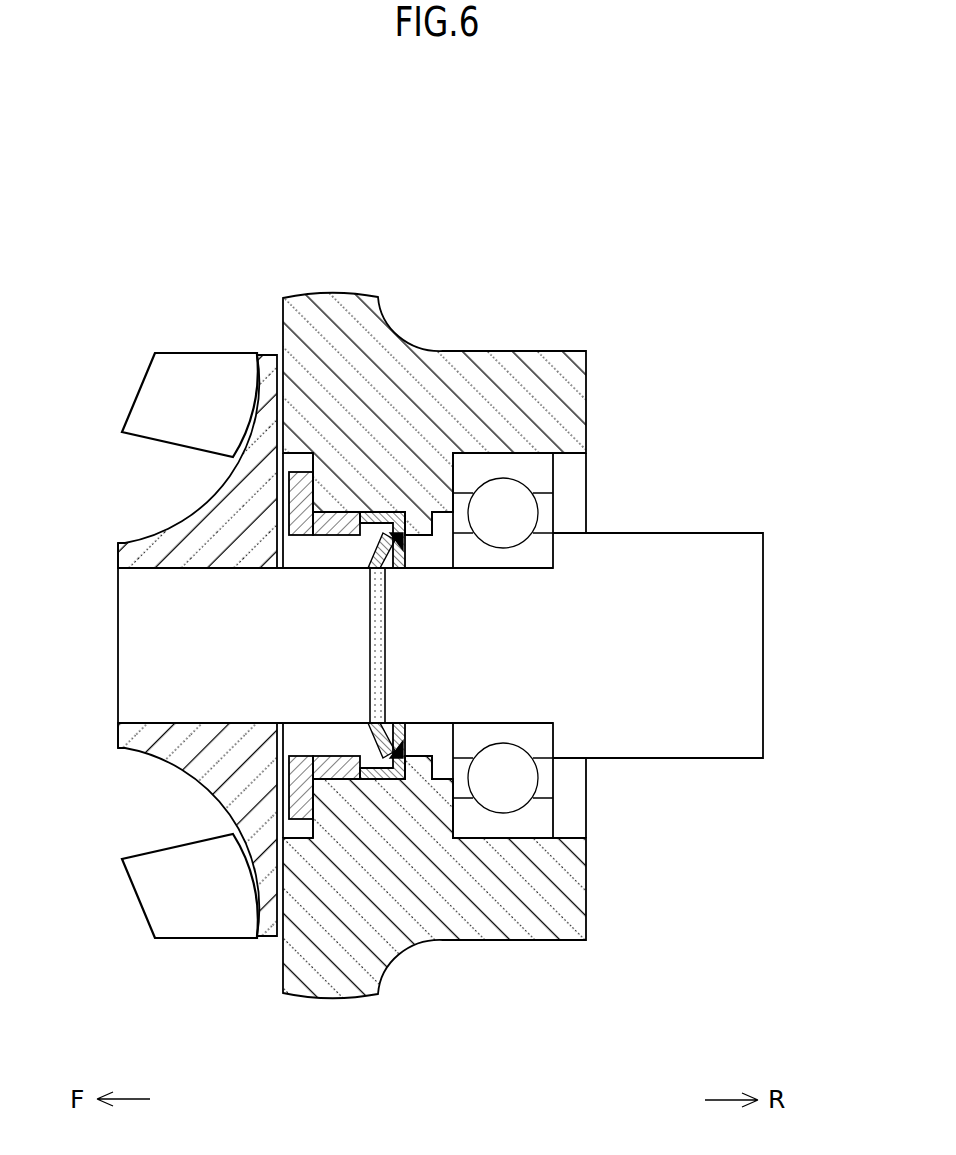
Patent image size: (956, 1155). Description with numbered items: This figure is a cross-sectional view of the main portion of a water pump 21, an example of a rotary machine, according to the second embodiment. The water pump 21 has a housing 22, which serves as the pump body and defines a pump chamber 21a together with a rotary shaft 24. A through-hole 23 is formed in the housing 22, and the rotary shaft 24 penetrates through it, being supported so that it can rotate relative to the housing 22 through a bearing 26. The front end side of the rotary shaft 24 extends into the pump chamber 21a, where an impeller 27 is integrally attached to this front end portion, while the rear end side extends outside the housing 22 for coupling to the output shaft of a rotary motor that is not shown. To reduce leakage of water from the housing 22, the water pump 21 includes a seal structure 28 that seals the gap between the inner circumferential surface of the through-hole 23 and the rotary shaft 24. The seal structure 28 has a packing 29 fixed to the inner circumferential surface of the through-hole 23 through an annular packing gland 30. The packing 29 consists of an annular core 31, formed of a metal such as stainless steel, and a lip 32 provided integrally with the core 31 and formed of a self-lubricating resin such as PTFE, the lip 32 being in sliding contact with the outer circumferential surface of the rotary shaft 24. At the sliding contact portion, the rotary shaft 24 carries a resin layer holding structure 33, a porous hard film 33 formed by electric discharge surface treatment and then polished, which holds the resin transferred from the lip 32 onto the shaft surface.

The water pump 21 is at (404, 550).
The pump chamber 21a is at (58, 423).
The housing 22 is at (463, 351).
The through-hole 23 is at (348, 510).
The rotary shaft 24 is at (120, 620).
The bearing 26 is at (538, 453).
The impeller 27 is at (172, 532).
The seal structure 28 is at (385, 488).
The packing 29 is at (432, 645).
The packing gland 30 is at (301, 570).
The core 31 is at (417, 570).
The lip 32 is at (392, 572).
The resin layer holding structure 33 is at (370, 670).